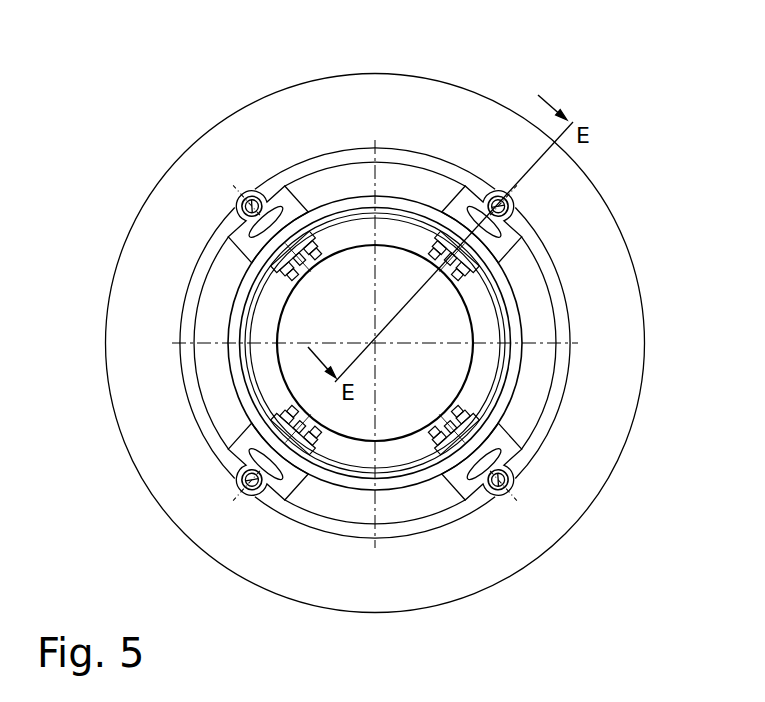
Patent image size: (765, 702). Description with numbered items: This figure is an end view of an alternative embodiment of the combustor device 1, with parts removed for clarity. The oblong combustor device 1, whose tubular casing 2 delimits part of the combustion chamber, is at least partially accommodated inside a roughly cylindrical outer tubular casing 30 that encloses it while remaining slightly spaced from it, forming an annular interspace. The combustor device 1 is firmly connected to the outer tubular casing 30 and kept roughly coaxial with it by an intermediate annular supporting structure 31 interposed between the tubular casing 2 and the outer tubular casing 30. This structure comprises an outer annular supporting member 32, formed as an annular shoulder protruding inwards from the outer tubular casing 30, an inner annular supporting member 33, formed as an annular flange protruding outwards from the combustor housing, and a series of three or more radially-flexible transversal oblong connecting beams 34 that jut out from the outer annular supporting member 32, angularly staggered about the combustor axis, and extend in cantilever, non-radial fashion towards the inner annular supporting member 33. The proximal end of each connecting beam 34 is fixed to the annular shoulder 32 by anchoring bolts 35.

The combustor device 1 is at (303, 344).
The tubular casing 2 is at (336, 501).
The outer tubular casing 30 is at (203, 158).
The intermediate annular supporting structure 31 is at (212, 245).
The outer annular supporting member 32 is at (192, 306).
The inner annular supporting member 33 is at (345, 202).
The radially-flexible transversal oblong connecting beam 34 is at (285, 197).
The anchoring bolt 35 is at (512, 202).